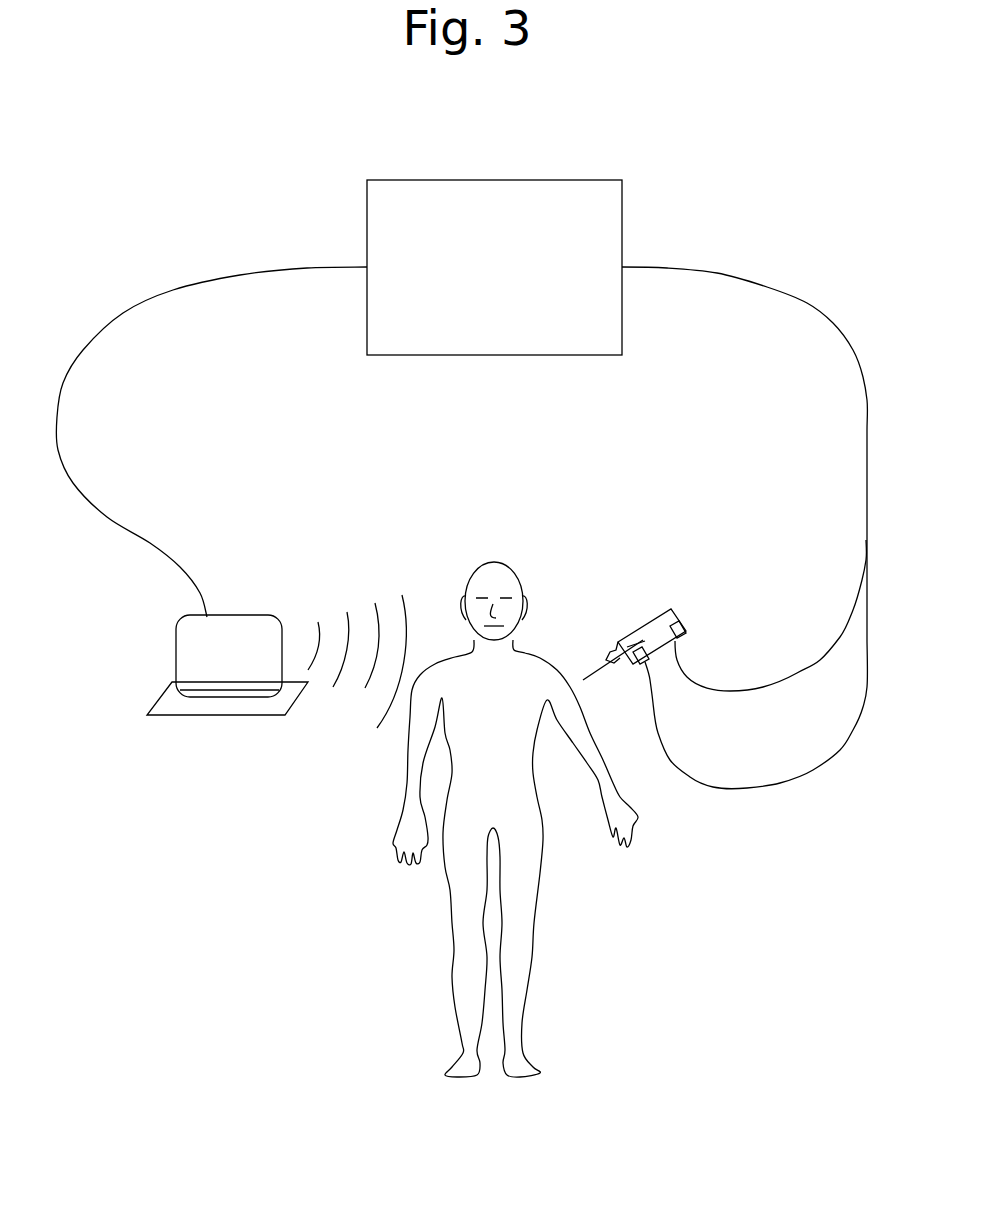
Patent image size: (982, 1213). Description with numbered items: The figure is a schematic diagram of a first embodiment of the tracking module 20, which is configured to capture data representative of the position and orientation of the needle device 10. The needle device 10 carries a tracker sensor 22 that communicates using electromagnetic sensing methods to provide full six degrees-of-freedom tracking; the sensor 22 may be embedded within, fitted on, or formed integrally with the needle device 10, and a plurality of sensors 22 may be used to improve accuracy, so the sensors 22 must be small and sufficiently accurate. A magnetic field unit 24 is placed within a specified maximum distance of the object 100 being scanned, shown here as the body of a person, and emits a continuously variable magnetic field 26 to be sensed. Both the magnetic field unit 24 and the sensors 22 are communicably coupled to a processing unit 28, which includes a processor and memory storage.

The tracking module 20 is at (128, 176).
The processing unit 28 is at (476, 277).
The magnetic field unit 24 is at (212, 668).
The magnetic field 26 is at (352, 697).
The object being scanned 100 is at (469, 580).
The needle device 10 is at (640, 626).
The tracker sensor 22 is at (682, 623).